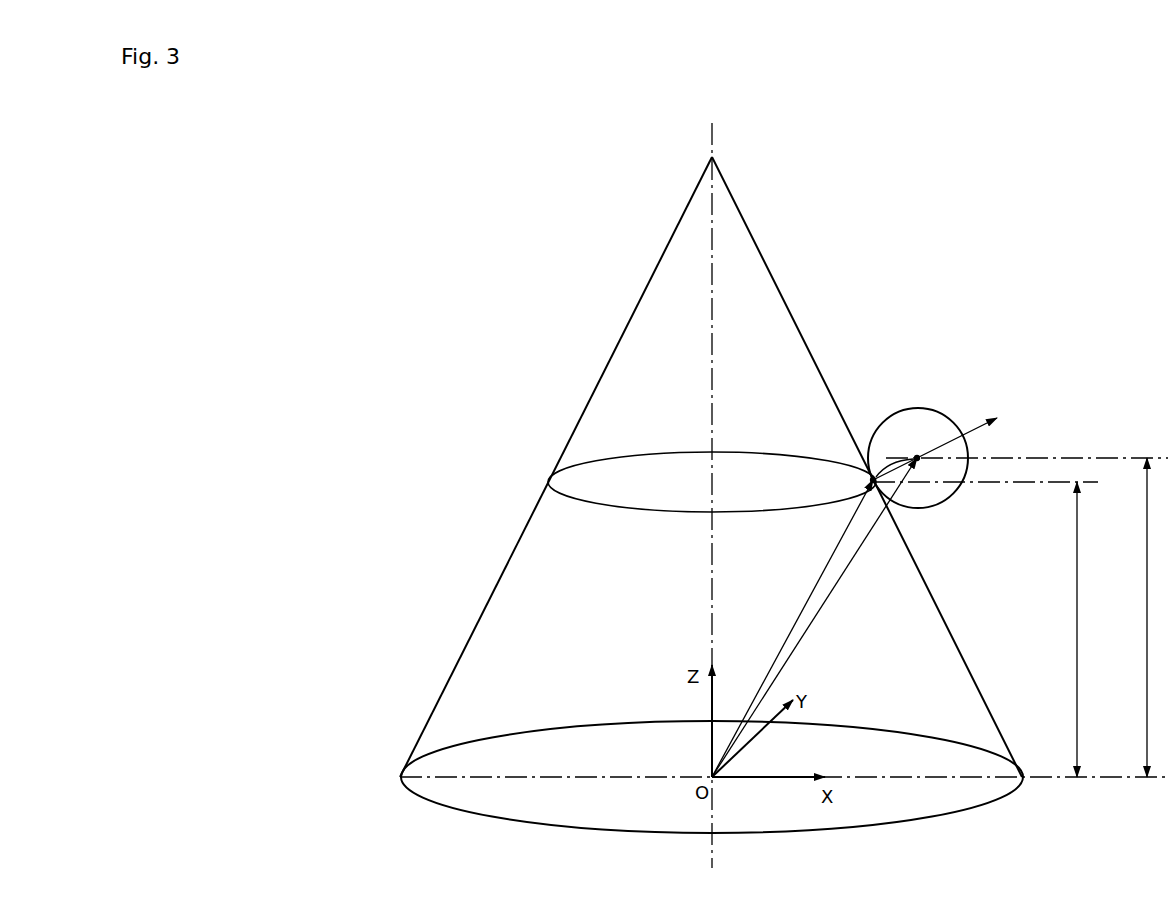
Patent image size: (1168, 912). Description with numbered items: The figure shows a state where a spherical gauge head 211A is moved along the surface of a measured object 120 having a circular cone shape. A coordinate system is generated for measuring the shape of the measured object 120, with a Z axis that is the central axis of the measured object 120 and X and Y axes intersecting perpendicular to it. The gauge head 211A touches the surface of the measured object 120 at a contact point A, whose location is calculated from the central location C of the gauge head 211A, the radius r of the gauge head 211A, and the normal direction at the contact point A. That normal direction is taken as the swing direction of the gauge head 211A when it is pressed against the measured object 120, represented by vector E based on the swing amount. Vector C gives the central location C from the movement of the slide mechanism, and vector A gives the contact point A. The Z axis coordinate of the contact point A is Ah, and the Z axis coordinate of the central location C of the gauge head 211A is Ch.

The measured object 120 is at (496, 627).
The gauge head 211A is at (903, 422).
The contact point A is at (871, 481).
The central location C is at (918, 455).
The vector E is at (1016, 408).
The radius r is at (894, 459).
The Z axis coordinate value of the contact point Ah is at (1061, 629).
The Z axis coordinate value in the central location of the gauge head Ch is at (1132, 617).